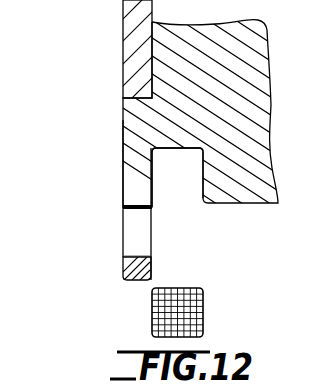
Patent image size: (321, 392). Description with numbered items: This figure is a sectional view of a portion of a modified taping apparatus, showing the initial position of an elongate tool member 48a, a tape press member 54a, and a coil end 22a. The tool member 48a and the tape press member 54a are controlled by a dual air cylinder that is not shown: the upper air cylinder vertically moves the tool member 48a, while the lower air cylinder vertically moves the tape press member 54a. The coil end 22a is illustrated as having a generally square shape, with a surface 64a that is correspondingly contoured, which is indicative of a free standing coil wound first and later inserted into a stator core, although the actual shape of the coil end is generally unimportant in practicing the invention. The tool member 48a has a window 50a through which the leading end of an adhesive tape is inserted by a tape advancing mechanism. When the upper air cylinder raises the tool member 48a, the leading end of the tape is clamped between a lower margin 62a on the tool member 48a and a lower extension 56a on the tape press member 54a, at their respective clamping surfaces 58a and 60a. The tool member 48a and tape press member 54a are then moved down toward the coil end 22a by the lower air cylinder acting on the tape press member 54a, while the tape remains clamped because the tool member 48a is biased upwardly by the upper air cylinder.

The coil end 22a is at (216, 319).
The elongate tool member 48a is at (131, 47).
The window 50a is at (152, 241).
The tape press member 54a is at (264, 30).
The lower extension 56a is at (137, 173).
The clamping surface 58a is at (138, 209).
The clamping surface 60a is at (138, 257).
The lower margin 62a is at (133, 279).
The surface 64a is at (172, 150).